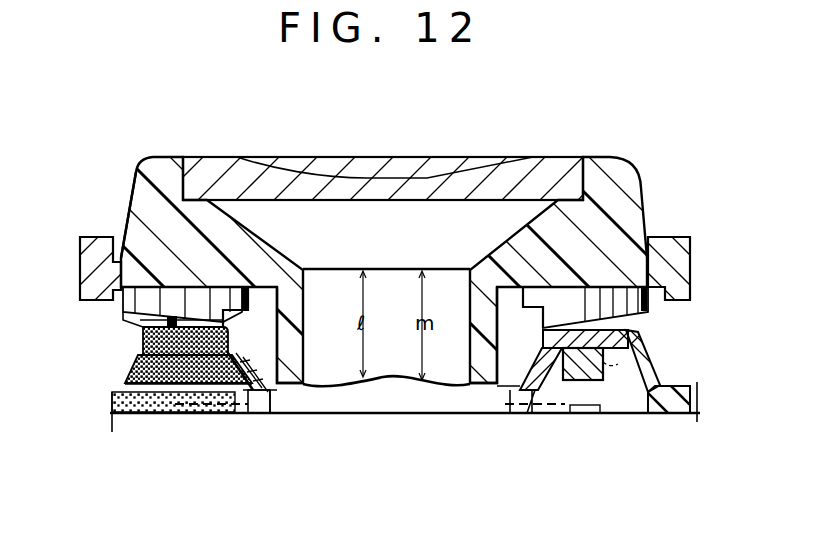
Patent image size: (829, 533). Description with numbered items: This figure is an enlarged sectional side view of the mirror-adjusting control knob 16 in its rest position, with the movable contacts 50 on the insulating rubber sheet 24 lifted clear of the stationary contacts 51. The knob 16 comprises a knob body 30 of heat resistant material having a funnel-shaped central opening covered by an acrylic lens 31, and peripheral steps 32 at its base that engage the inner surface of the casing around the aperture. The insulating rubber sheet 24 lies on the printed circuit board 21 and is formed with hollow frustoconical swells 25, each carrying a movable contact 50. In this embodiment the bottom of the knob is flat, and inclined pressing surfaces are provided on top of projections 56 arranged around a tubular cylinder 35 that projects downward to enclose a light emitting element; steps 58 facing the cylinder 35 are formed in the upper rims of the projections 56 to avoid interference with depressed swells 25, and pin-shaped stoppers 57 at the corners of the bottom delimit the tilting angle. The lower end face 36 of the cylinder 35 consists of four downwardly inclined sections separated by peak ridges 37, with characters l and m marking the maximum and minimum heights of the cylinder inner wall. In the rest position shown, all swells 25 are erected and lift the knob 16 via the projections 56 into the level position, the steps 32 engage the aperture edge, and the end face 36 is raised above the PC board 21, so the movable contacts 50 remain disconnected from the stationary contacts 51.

The control knob 16 is at (598, 154).
The printed circuit board 21 is at (118, 422).
The insulating rubber sheet 24 is at (122, 396).
The swells 25 is at (140, 372).
The knob body 30 is at (140, 203).
The lens 31 is at (290, 172).
The peripheral steps 32 is at (121, 268).
The tubular cylinder 35 is at (284, 378).
The lower end face 36 is at (456, 388).
The peak ridges 37 is at (325, 388).
The movable contacts 50 is at (597, 380).
The stationary contacts 51 is at (185, 408).
The projections 56 is at (128, 298).
The pin-shaped stoppers 57 is at (140, 320).
The steps 58 is at (527, 306).